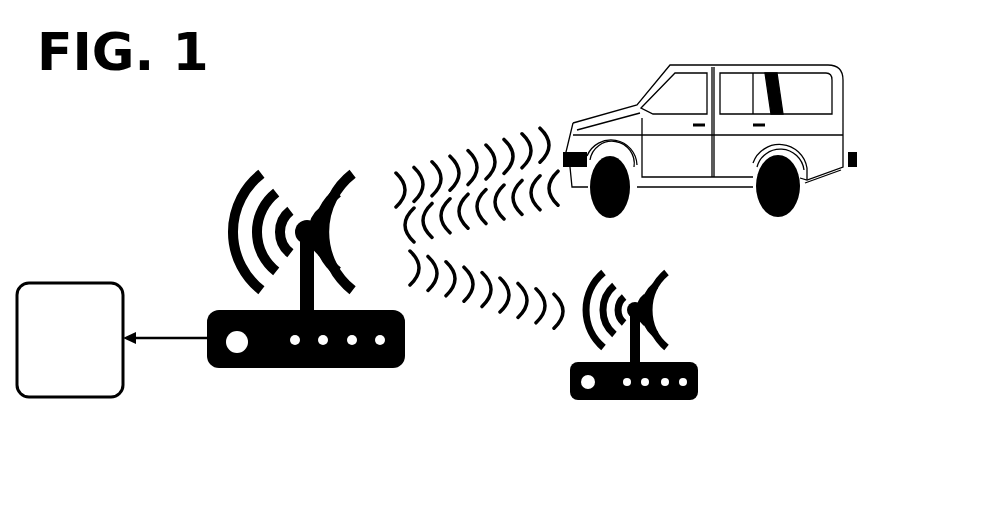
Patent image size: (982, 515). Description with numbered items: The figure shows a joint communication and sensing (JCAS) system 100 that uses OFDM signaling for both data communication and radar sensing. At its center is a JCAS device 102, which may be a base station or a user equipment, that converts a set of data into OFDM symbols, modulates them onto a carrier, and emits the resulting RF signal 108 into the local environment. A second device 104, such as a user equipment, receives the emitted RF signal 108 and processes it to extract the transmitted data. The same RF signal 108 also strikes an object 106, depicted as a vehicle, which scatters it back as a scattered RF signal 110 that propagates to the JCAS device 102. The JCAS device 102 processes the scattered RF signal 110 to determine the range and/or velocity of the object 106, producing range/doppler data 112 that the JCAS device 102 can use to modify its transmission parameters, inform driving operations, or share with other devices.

The JCAS system 100 is at (413, 92).
The JCAS device 102 is at (305, 369).
The second device 104 is at (632, 401).
The object 106 is at (795, 64).
The RF signal 108 is at (476, 155).
The scattered RF signal 110 is at (532, 212).
The range/doppler data 112 is at (112, 340).